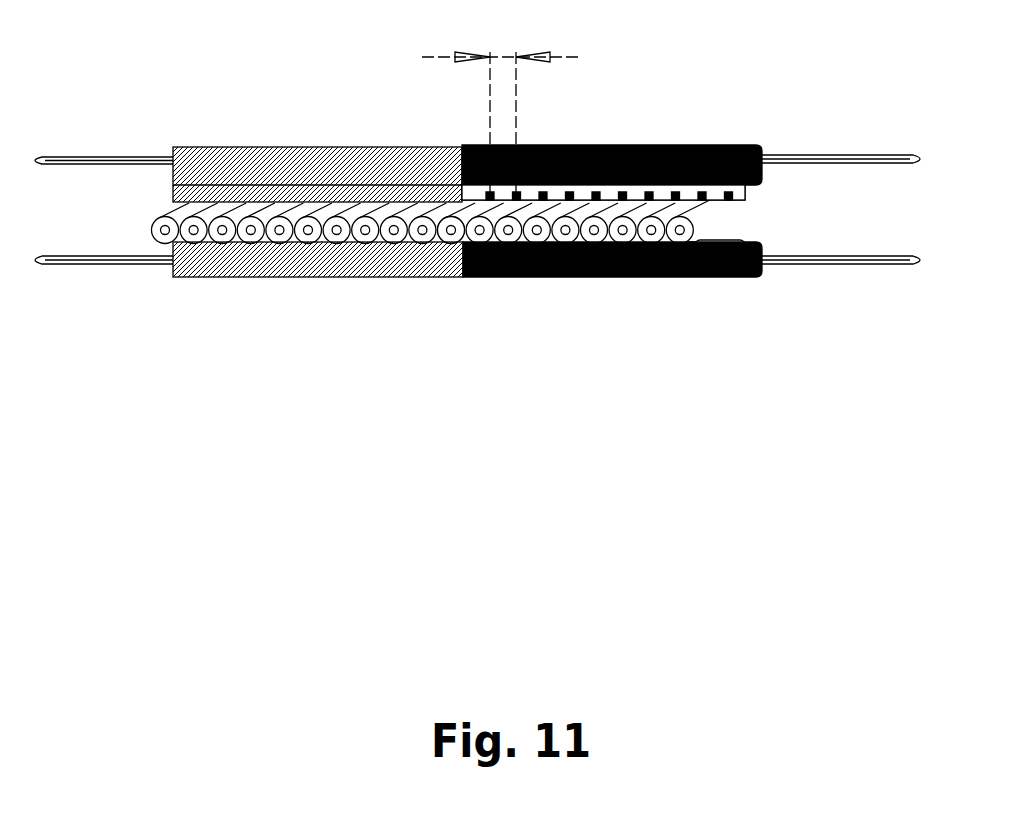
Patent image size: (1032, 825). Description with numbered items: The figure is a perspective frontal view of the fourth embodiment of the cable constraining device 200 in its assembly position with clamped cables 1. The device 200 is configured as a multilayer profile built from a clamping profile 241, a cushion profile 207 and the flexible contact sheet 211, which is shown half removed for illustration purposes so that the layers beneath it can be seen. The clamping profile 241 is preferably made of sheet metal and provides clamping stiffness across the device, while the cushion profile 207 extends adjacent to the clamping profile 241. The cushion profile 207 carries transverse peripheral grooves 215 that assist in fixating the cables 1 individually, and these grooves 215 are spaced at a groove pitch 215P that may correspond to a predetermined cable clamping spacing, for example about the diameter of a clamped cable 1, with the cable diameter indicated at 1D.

The cable constraining device 200 is at (477, 201).
The flexible contact sheet 211 is at (297, 162).
The cable 1 is at (160, 218).
The wire end 1D is at (439, 252).
The groove pitch 215P is at (502, 114).
The transverse peripheral grooves 215 is at (680, 192).
The cushion profile 207 is at (724, 185).
The clamping profile 241 is at (785, 158).